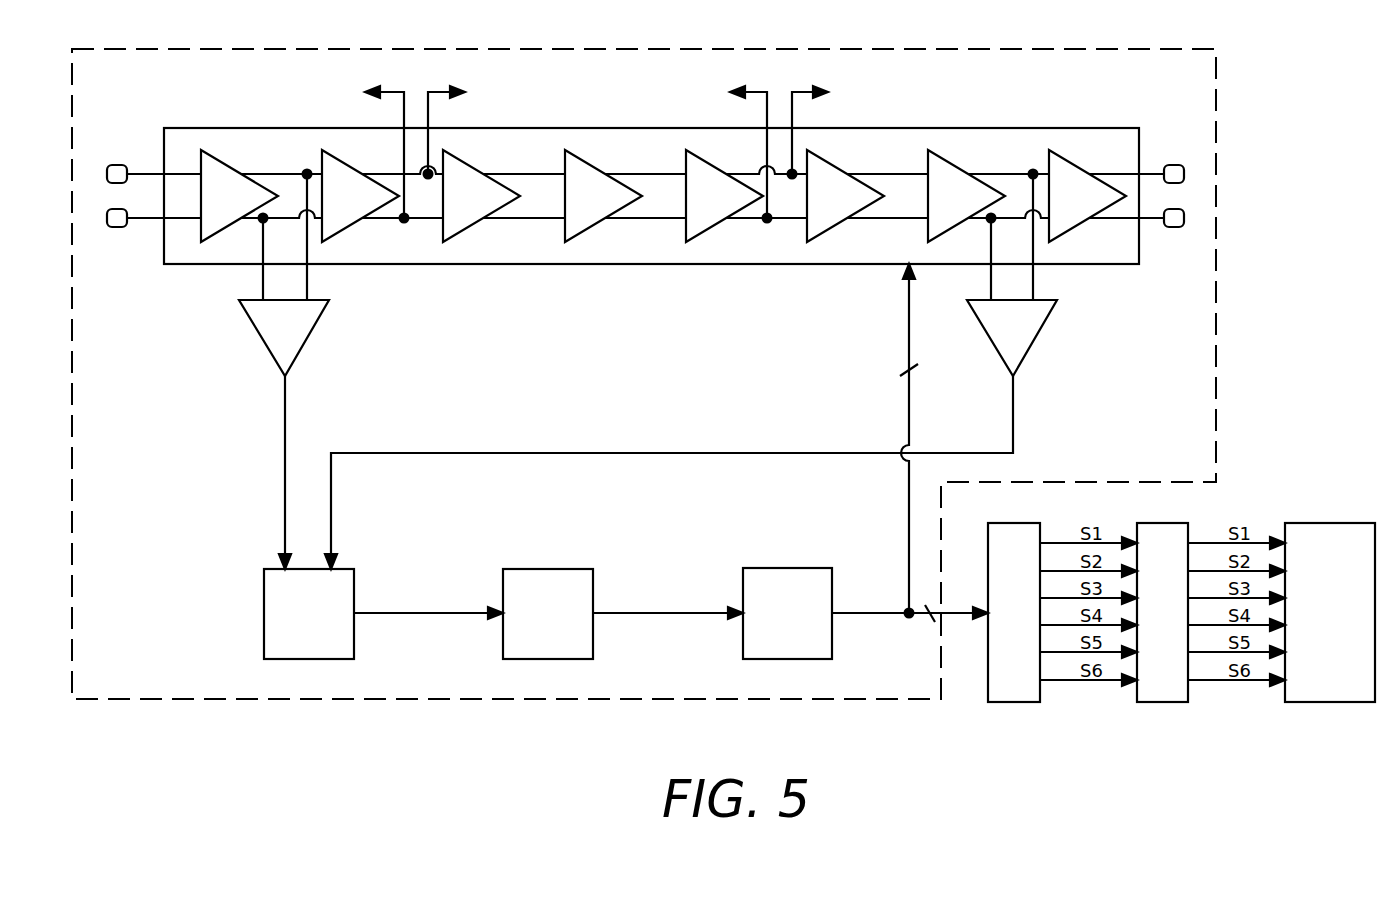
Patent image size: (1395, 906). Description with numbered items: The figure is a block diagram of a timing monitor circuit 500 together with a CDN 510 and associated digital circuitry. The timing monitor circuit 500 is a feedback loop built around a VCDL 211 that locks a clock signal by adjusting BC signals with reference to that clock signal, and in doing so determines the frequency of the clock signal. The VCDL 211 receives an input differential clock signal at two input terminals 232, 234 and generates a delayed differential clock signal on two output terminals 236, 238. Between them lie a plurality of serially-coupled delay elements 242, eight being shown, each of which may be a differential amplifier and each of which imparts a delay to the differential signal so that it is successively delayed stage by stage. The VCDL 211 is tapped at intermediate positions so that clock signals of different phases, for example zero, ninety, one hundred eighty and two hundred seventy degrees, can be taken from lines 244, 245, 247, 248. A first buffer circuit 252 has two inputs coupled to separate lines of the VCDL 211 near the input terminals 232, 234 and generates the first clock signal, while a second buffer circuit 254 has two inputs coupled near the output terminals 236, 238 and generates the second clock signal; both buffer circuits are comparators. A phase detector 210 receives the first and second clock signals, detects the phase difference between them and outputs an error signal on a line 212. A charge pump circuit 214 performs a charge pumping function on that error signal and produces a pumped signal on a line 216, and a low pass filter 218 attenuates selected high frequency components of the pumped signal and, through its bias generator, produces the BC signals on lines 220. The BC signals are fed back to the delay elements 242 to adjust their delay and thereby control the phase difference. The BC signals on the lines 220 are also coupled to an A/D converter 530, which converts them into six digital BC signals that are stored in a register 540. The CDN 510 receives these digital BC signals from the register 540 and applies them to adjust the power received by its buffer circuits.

The timing monitor circuit 500 is at (1185, 49).
The VCDL 211 is at (652, 128).
The delay element 242 is at (226, 167).
The input terminal 232 is at (118, 164).
The input terminal 234 is at (118, 228).
The output terminal 236 is at (1174, 164).
The output terminal 238 is at (1174, 228).
The line 244 is at (400, 90).
The line 245 is at (432, 90).
The line 247 is at (762, 90).
The line 248 is at (796, 90).
The first buffer circuit 252 is at (305, 340).
The second buffer circuit 254 is at (1035, 340).
The phase detector 210 is at (264, 613).
The line 212 is at (430, 610).
The charge pump circuit 214 is at (548, 567).
The line 216 is at (667, 610).
The low pass filter 218 is at (788, 565).
The lines 220 is at (872, 610).
The A/D converter 530 is at (1013, 702).
The register 540 is at (1163, 702).
The CDN 510 is at (1332, 702).